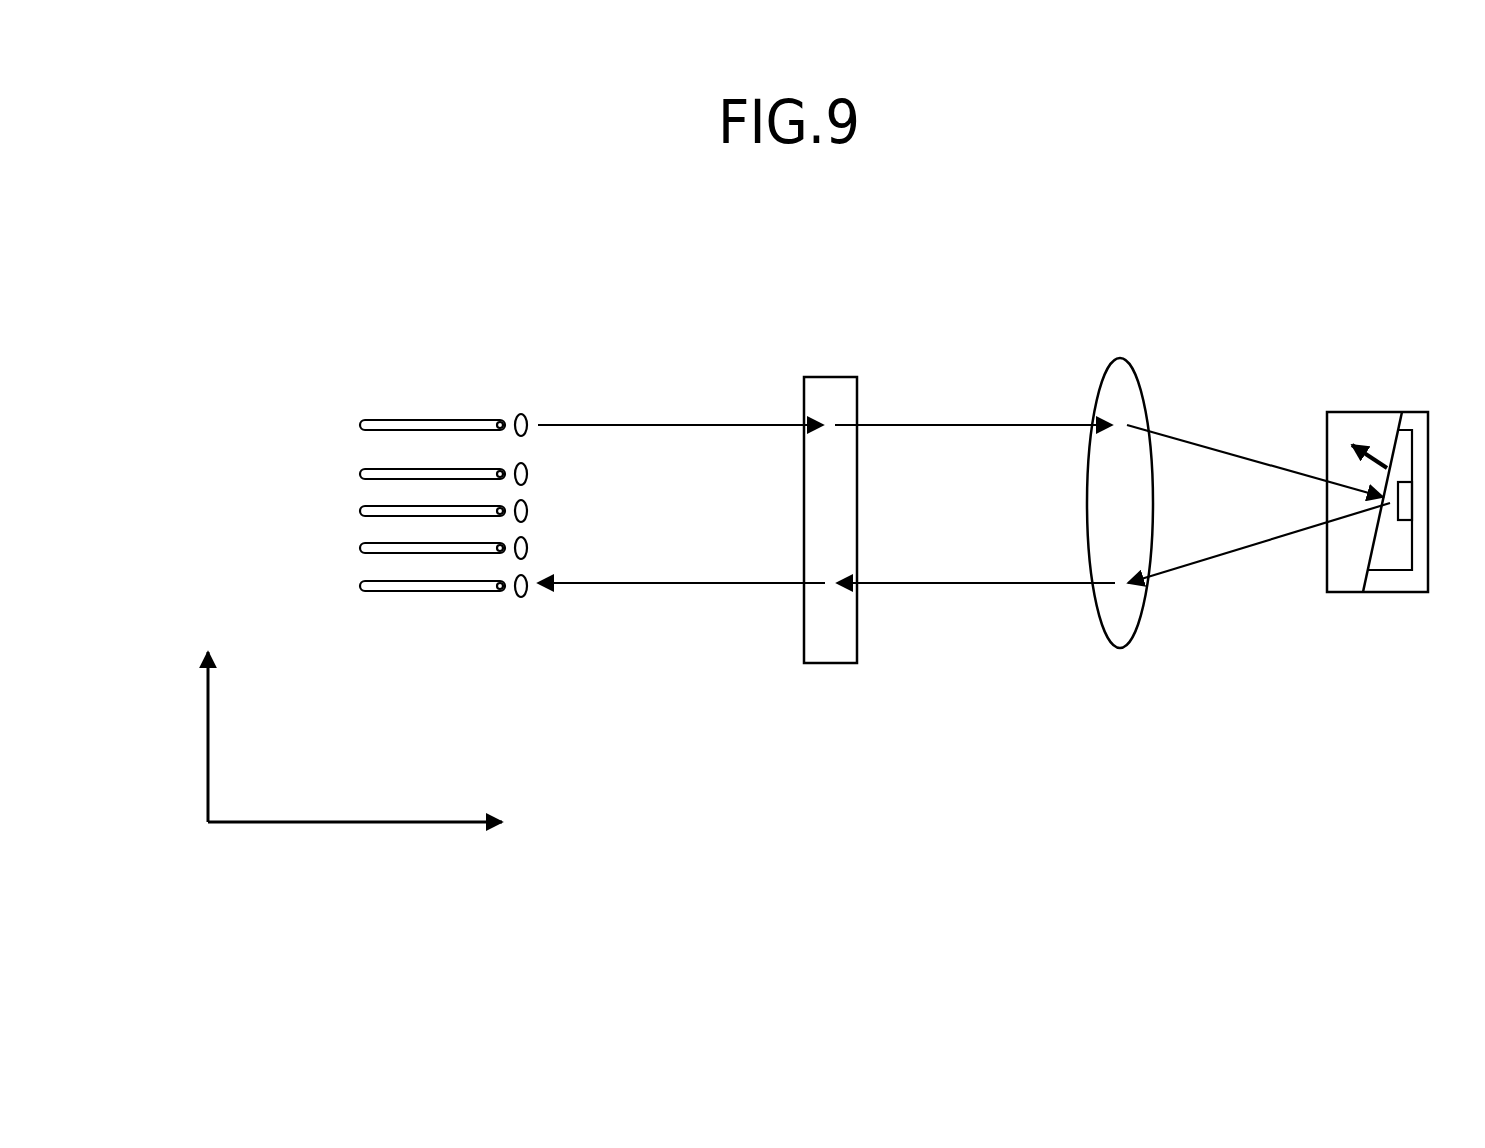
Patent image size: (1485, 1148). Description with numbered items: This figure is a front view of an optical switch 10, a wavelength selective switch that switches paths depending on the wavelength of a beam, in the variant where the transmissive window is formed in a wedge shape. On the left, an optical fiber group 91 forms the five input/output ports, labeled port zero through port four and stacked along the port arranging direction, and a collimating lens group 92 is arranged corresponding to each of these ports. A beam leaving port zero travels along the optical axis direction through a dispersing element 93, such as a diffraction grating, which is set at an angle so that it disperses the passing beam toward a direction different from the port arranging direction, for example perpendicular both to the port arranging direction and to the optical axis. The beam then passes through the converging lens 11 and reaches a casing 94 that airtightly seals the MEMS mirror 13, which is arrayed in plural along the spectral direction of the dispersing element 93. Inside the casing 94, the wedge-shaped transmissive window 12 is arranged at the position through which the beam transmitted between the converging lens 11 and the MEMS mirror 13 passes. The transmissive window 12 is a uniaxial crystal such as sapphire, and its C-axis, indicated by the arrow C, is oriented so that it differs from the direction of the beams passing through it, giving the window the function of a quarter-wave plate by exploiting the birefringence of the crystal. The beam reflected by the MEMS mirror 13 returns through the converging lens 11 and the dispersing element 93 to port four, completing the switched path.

The optical switch 10 is at (1016, 304).
The converging lens 11 is at (1132, 364).
The transmissive window 12 is at (1340, 411).
The MEMS mirror 13 is at (1402, 522).
The optical fiber group 91 is at (432, 406).
The collimating lens group 92 is at (530, 406).
The dispersing element 93 is at (832, 377).
The casing 94 is at (1420, 411).
The C-axis C is at (1346, 446).